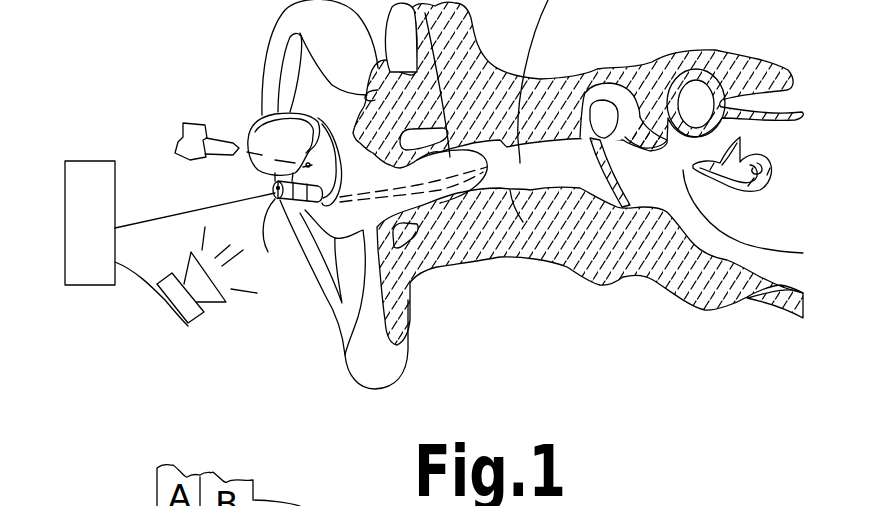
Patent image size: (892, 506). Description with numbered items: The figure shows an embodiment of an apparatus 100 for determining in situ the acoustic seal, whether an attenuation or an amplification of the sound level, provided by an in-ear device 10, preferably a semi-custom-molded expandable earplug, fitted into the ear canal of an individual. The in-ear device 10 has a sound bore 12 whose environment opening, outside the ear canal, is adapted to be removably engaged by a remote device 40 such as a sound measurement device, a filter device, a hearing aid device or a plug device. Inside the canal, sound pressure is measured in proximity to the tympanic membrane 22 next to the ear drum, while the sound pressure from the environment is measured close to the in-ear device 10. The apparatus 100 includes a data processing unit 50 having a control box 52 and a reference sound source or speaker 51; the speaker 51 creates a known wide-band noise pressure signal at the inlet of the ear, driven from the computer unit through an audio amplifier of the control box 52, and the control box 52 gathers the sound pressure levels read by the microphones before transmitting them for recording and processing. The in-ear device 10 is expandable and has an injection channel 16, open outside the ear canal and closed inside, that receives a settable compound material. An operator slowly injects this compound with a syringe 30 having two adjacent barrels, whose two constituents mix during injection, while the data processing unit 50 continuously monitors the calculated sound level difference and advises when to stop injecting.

The apparatus 100 is at (145, 214).
The in-ear device 10 is at (343, 323).
The sound bore 12 is at (427, 282).
The injection channel 16 is at (358, 150).
The tympanic membrane 22 is at (638, 105).
The syringe 30 is at (203, 127).
The remote device 40 is at (232, 277).
The data processing unit 50 is at (145, 295).
The reference sound source 51 is at (210, 307).
The control box 52 is at (65, 255).